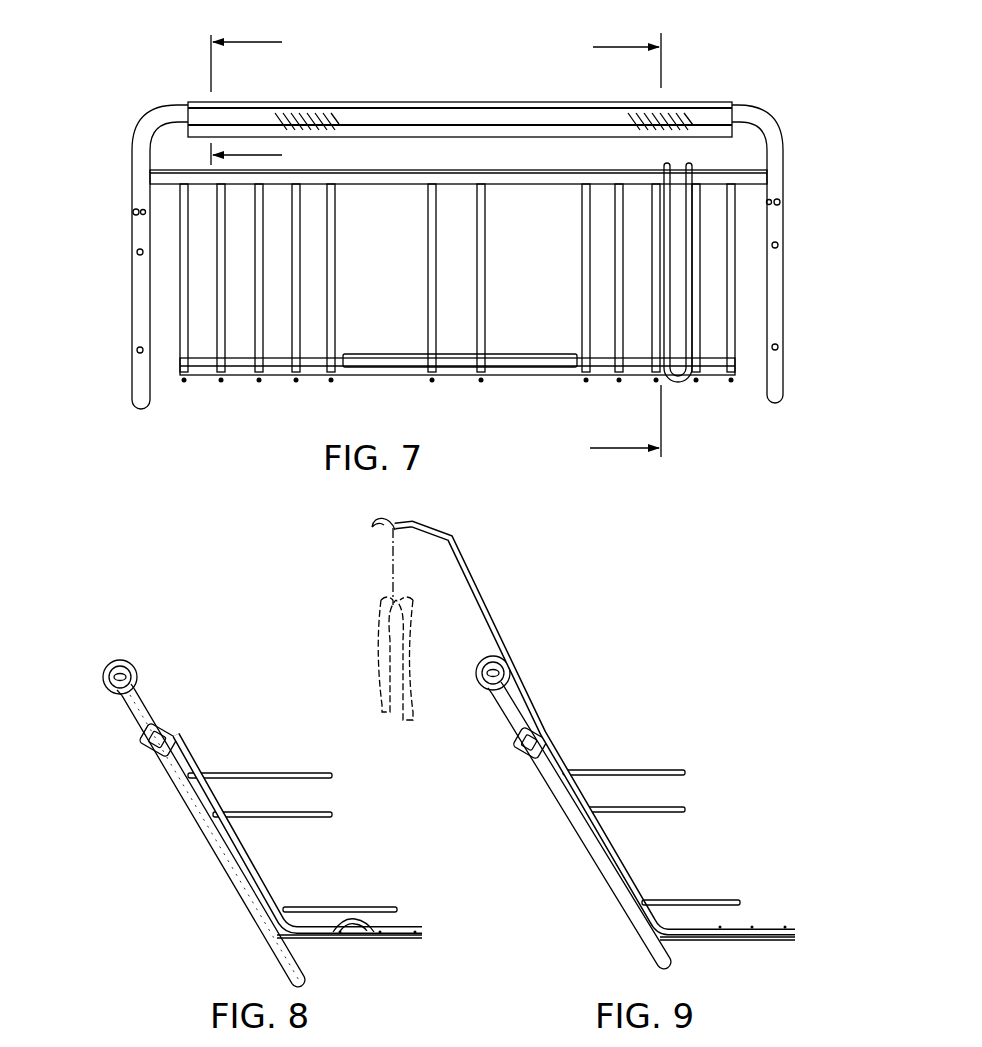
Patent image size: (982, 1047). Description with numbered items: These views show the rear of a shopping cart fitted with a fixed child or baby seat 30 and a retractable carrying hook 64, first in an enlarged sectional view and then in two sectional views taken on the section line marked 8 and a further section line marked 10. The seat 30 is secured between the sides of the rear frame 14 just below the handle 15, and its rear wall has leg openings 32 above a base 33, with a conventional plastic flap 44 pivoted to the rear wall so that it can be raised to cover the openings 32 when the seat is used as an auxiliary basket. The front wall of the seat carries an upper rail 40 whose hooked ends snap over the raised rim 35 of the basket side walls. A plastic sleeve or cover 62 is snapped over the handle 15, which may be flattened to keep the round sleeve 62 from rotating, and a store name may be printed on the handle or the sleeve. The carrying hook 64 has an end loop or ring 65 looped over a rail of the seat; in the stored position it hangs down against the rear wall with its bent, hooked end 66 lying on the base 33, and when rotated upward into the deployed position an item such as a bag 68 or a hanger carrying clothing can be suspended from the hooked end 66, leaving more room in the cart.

In FIG. 7, the section line 8- 8 is at (614, 248).
In FIG. 7, the section line 10- 10 is at (263, 99).
In FIG. 7, the rear frame 14 is at (140, 301).
In FIG. 8, the rear frame 14 is at (206, 838).
In FIG. 9, the rear frame 14 is at (598, 860).
In FIG. 7, the handle 15 is at (185, 110).
In FIG. 8, the handle 15 is at (120, 692).
In FIG. 9, the handle 15 is at (500, 692).
In FIG. 7, the child or baby seat 30 is at (310, 394).
In FIG. 7, the leg openings 32 is at (368, 256).
In FIG. 7, the base 33 is at (272, 378).
In FIG. 8, the base 33 is at (391, 940).
In FIG. 9, the base 33 is at (736, 937).
In FIG. 7, the raised rim 35 is at (134, 210).
In FIG. 8, the raised rim 35 is at (266, 772).
In FIG. 9, the raised rim 35 is at (626, 768).
In FIG. 8, the upper rail 40 is at (171, 737).
In FIG. 9, the upper rail 40 is at (543, 738).
In FIG. 7, the plastic flap 44 is at (405, 355).
In FIG. 7, the sleeve or cover 62 is at (477, 102).
In FIG. 8, the sleeve or cover 62 is at (131, 661).
In FIG. 9, the sleeve or cover 62 is at (486, 664).
In FIG. 7, the carrying hook 64 is at (666, 250).
In FIG. 8, the carrying hook 64 is at (259, 870).
In FIG. 9, the carrying hook 64 is at (467, 563).
In FIG. 7, the end loop or ring 65 is at (664, 167).
In FIG. 8, the end loop or ring 65 is at (143, 740).
In FIG. 9, the end loop or ring 65 is at (519, 746).
In FIG. 7, the hooked end 66 is at (681, 384).
In FIG. 8, the hooked end 66 is at (357, 915).
In FIG. 9, the hooked end 66 is at (388, 531).
In FIG. 9, the bag 68 is at (379, 681).